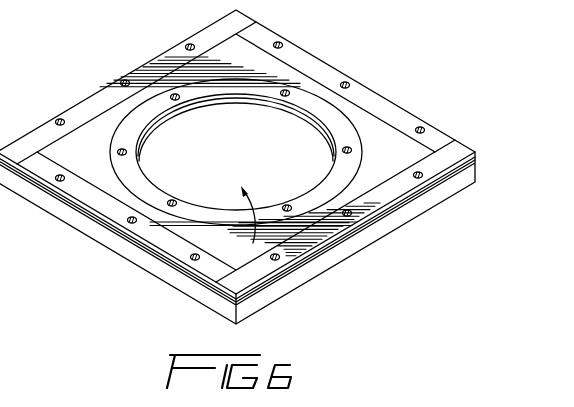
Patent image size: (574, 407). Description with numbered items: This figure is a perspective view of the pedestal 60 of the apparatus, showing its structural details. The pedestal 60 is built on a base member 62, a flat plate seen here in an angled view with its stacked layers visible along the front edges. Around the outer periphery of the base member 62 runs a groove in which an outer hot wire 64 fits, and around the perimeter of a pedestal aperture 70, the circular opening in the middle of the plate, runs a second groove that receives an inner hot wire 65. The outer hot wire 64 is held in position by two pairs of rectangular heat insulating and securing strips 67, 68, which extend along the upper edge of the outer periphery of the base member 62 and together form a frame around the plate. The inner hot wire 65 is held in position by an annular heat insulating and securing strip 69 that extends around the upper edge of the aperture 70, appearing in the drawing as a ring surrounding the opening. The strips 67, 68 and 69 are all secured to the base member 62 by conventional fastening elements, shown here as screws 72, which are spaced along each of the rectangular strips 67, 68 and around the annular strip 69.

The pedestal 60 is at (316, 36).
The base member 62 is at (98, 230).
The outer hot wire 64 is at (148, 252).
The inner hot wire 65 is at (205, 104).
The outer securing and heat insulating strips 67 is at (387, 106).
The outer securing and heat insulating strips 68 is at (80, 110).
The inner securing and heat insulating strip 69 is at (352, 135).
The pedestal aperture 70 is at (237, 224).
The screws 72 is at (128, 80).